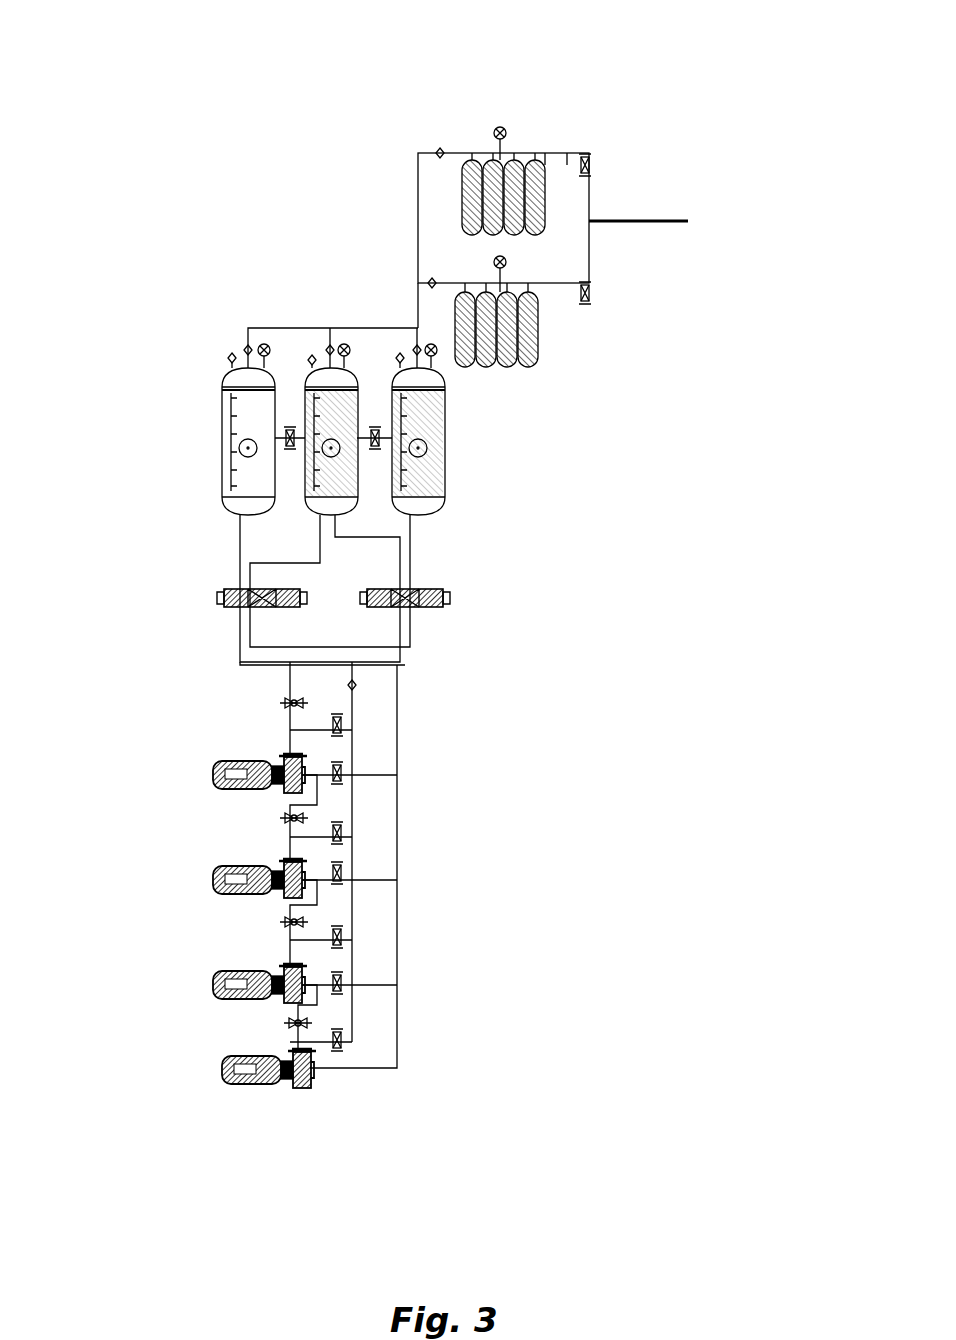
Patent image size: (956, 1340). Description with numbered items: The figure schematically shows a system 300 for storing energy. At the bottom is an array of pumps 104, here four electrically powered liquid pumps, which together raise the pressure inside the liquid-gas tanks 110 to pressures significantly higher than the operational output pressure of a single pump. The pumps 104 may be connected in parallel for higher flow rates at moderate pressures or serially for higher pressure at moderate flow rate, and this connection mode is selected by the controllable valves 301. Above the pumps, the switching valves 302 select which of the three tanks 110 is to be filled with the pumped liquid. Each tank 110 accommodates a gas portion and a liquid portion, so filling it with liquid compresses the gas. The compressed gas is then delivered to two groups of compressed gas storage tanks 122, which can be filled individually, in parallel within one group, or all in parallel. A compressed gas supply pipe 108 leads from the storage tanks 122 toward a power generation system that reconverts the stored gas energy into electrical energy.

The system for storing energy 300 is at (748, 104).
The compressed gas supply pipe 108 is at (625, 221).
The compressed gas storage tanks 122 is at (460, 297).
The liquid-gas tanks 110 is at (222, 412).
The switching valves 302 is at (452, 598).
The controllable valves 301 is at (335, 835).
The pumps 104 is at (222, 1070).